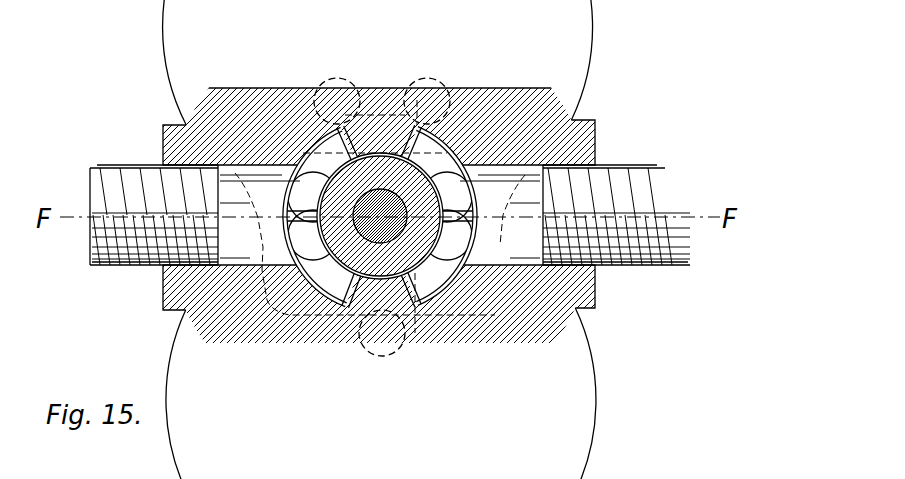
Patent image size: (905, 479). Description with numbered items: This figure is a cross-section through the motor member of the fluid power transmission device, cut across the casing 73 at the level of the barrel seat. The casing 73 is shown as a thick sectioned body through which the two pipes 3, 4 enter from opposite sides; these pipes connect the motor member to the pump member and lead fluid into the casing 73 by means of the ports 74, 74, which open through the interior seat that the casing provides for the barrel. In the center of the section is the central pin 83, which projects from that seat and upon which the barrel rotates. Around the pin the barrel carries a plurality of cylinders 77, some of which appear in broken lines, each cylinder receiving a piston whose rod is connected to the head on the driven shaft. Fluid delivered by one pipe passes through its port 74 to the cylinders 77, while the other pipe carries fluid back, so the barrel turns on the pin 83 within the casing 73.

The casing 73 is at (222, 63).
The cylinders 77 is at (413, 78).
The ports 74 is at (280, 193).
The pipe 4 is at (108, 268).
The pipe 3 is at (665, 266).
The central pin 83 is at (398, 232).